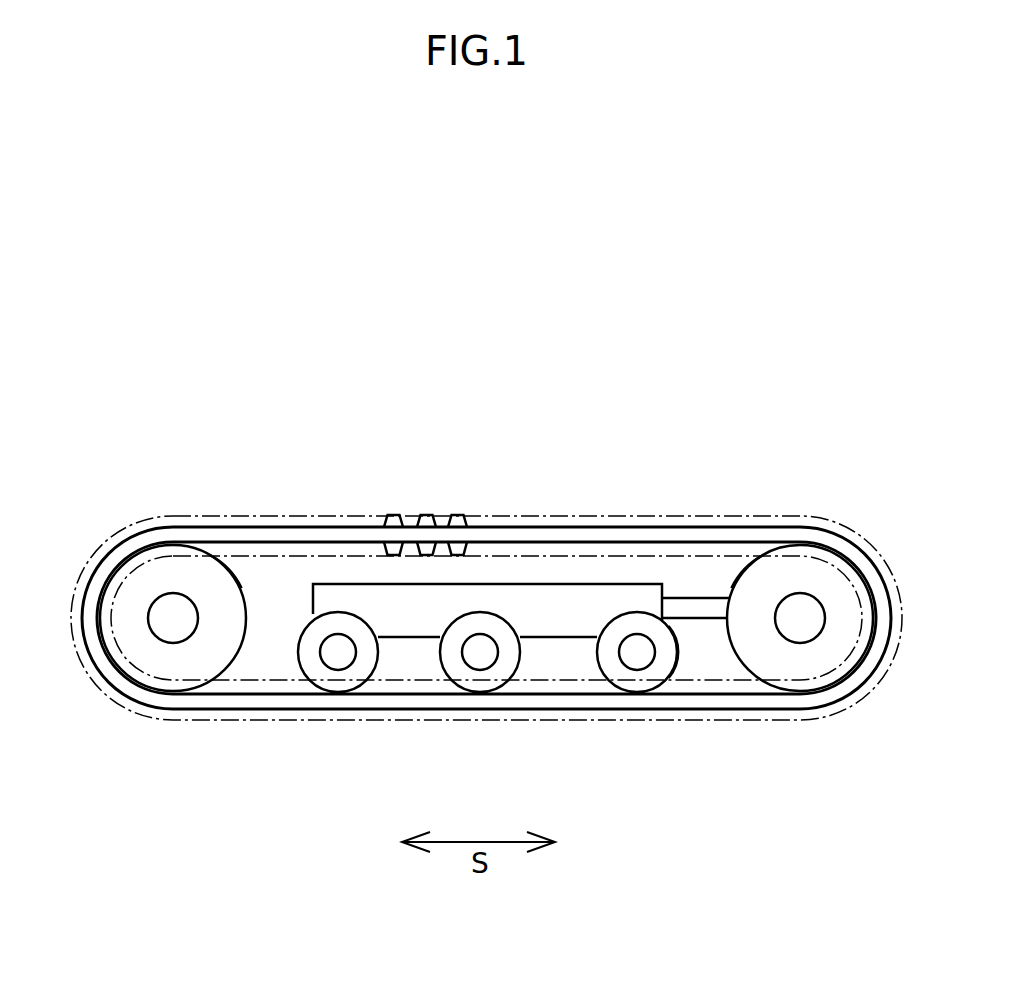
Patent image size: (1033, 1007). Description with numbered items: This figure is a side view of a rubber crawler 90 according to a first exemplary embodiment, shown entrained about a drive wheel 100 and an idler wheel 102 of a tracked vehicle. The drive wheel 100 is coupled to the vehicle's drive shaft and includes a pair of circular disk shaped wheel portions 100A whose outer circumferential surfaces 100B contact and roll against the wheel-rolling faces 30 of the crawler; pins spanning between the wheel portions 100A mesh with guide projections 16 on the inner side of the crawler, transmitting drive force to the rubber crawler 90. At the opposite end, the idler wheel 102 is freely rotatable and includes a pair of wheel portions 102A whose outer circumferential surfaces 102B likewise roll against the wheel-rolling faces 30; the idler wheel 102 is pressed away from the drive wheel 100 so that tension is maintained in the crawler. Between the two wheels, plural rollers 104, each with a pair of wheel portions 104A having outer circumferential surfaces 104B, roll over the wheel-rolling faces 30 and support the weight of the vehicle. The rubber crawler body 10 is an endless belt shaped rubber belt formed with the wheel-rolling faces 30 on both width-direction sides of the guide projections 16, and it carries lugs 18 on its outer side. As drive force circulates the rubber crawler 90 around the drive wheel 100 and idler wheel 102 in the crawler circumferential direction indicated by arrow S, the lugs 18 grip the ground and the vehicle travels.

The rubber crawler body 10 is at (592, 524).
The guide projections 16 is at (468, 548).
The lugs 18 is at (422, 508).
The wheel-rolling face 30 is at (334, 545).
The rubber crawler 90 is at (670, 512).
The drive wheel 100 is at (252, 594).
The wheel portions 100A is at (148, 547).
The outer circumferential surfaces 100B is at (247, 555).
The idler wheel 102 is at (731, 582).
The wheel portions 102A is at (812, 548).
The outer circumferential surfaces 102B is at (764, 555).
The rollers 104 is at (340, 696).
The wheel portions 104A is at (604, 657).
The outer circumferential surfaces 104B is at (676, 661).